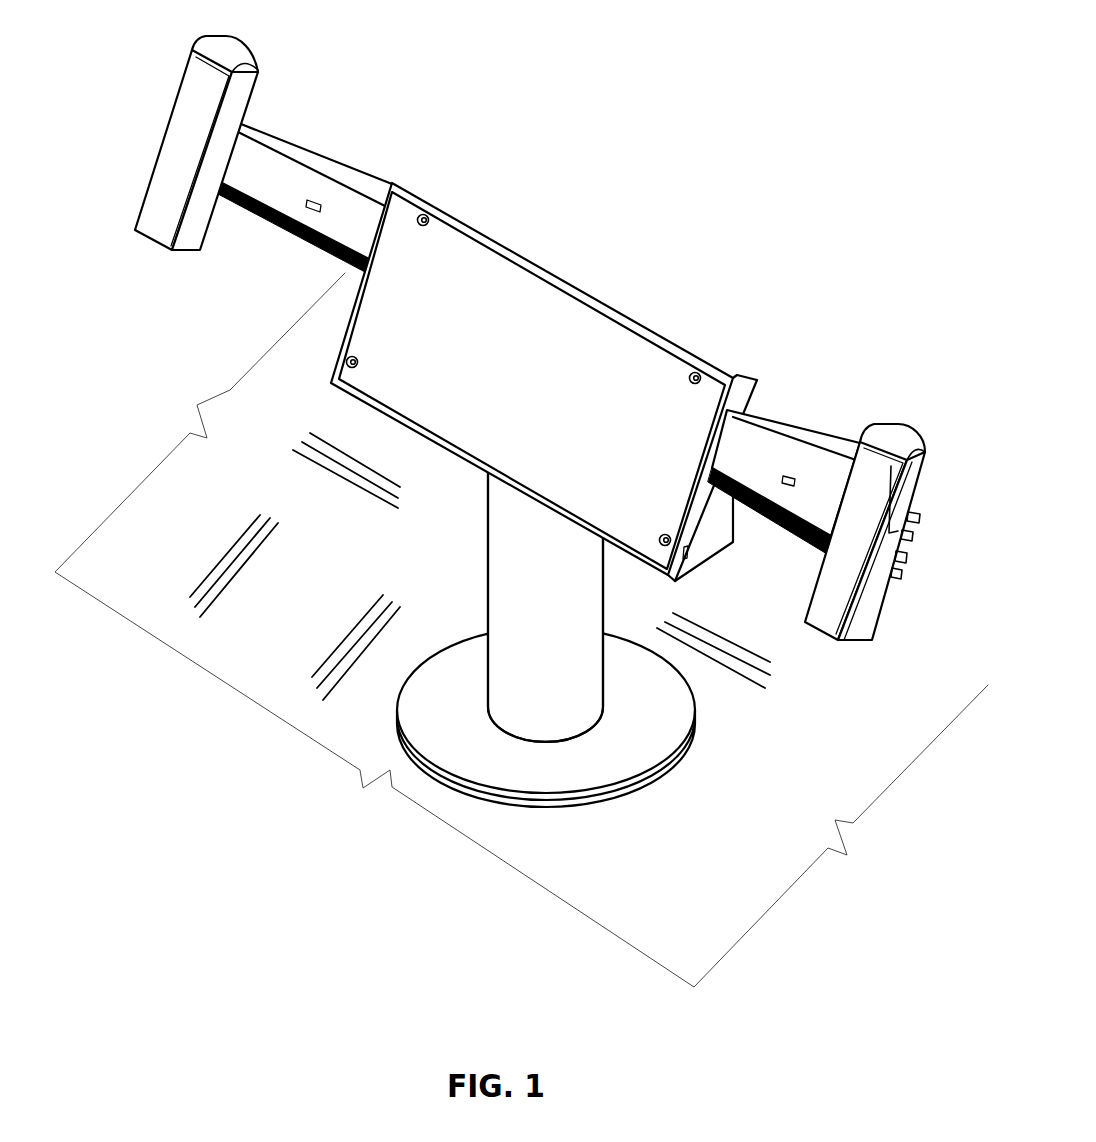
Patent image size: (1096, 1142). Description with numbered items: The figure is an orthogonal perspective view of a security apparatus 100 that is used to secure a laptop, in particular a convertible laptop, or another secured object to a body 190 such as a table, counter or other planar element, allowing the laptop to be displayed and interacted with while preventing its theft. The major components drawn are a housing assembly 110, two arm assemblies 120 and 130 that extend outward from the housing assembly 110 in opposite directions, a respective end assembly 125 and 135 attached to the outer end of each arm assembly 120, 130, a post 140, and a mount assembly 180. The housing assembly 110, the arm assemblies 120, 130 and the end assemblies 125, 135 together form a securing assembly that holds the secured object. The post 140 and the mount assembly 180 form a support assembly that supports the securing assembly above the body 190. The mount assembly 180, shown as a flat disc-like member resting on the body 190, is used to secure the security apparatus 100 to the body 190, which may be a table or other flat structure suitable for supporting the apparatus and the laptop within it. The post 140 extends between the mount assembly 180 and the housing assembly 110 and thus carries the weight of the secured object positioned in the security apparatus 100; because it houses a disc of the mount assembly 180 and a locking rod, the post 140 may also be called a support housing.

The security apparatus 100 is at (521, 499).
The housing assembly 110 is at (684, 327).
The arm assembly 120 is at (850, 406).
The end assembly 125 is at (966, 481).
The arm assembly 130 is at (322, 152).
The end assembly 135 is at (240, 33).
The post 140 is at (597, 630).
The mount assembly 180 is at (681, 730).
The body 190 is at (170, 556).